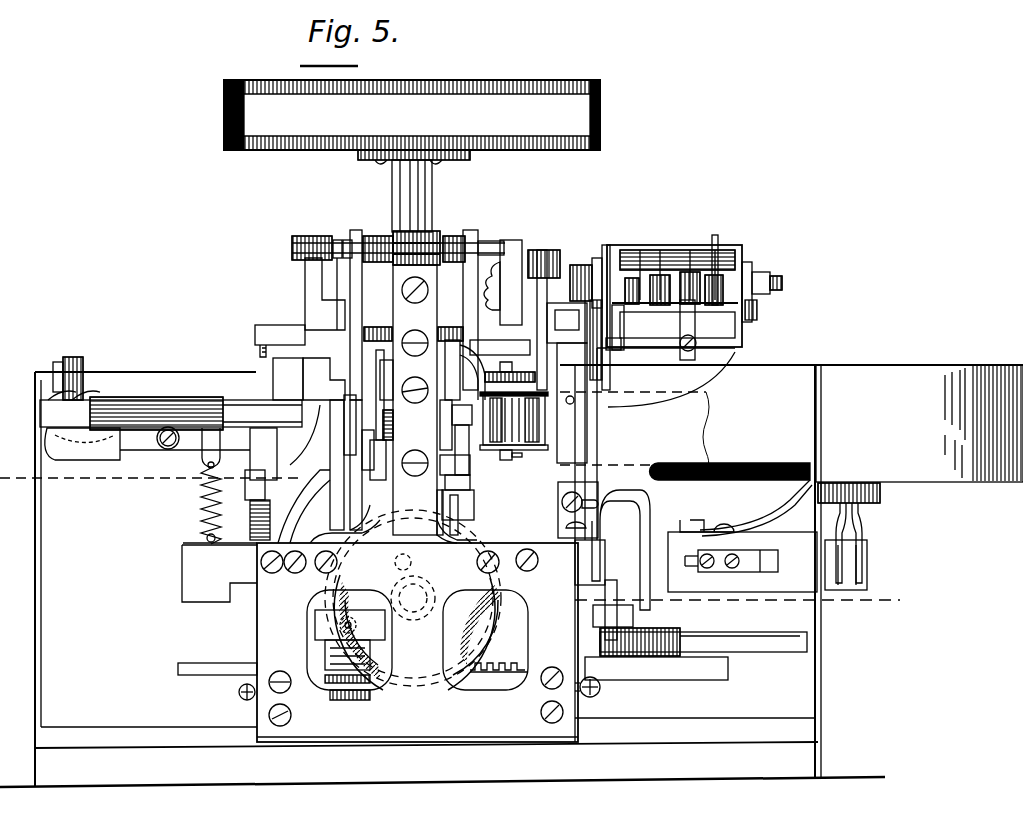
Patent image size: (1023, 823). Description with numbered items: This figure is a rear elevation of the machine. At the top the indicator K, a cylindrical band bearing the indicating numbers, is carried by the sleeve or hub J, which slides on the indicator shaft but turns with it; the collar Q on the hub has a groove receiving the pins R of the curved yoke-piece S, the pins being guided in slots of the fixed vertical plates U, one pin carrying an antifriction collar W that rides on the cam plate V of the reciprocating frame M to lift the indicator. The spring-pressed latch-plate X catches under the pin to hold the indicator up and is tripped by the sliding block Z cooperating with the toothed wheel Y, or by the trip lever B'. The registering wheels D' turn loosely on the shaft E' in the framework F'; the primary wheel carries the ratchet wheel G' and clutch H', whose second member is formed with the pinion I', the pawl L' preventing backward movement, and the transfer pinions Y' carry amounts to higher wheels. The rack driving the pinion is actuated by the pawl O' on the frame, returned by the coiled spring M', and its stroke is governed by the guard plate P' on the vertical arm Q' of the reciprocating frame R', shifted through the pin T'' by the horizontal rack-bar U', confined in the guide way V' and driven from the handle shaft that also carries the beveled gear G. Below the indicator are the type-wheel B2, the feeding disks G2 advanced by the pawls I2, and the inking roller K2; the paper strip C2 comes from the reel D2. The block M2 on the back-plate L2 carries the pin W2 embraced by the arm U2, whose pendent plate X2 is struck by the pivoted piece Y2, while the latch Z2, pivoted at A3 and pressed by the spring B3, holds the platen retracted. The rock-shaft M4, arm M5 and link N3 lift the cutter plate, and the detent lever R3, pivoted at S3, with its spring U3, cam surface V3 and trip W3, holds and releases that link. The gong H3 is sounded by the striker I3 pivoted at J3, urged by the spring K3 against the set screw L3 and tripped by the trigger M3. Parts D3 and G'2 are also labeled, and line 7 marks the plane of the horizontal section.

The indicator K is at (600, 120).
The sleeve or hub J is at (435, 190).
The antifriction collar W is at (300, 237).
The latch-plate X is at (336, 240).
The pins R is at (422, 233).
The yoke-piece S is at (376, 236).
The collar Q is at (422, 236).
The cam plate V is at (300, 307).
The fixed vertical plates U is at (414, 315).
The sliding block Z is at (385, 327).
The toothed wheel Y is at (413, 400).
The pawl O' is at (509, 282).
The coiled spring M' is at (553, 323).
The adjustable guard plate P' is at (540, 320).
The spring-pressed pawls I2 is at (487, 370).
The feeding disks G2 is at (525, 372).
The pinion I' is at (581, 267).
The clutch H' is at (596, 299).
The ratchet wheel G' is at (616, 308).
The registering wheels D' is at (674, 282).
The transfer pinions Y' is at (674, 281).
The shaft E' is at (774, 292).
The framework F' is at (732, 330).
The pawl L' is at (624, 332).
The link N3 is at (83, 365).
The arm M5 is at (85, 395).
The rock-shaft M4 is at (171, 403).
The reciprocating frame or carriage M is at (288, 379).
The trip lever B' is at (324, 381).
The spring B3 is at (382, 380).
The pin W2 is at (440, 415).
The pivot A3 is at (412, 427).
The block M2 is at (442, 450).
The latch Z2 is at (378, 455).
The pendent plate X2 is at (445, 483).
The arm U2 is at (500, 462).
The pivoted piece Y2 is at (470, 500).
The type-wheel B2 is at (515, 412).
The inking roller K2 is at (548, 420).
The paper strip C2 is at (881, 423).
The reel D2 is at (730, 483).
The vertical arm Q' is at (627, 550).
The section line 7 is at (746, 599).
The reciprocating frame R' is at (703, 635).
The lever T'' is at (656, 668).
The guide way V' is at (643, 642).
The beveled gear G is at (440, 632).
The gong H3 is at (485, 640).
The rack-bar U' is at (499, 653).
The striker I3 is at (362, 600).
The pivot J3 is at (345, 625).
The trigger M3 is at (330, 660).
The set screw L3 is at (335, 690).
The coiled spring K3 is at (350, 712).
The back-plate L2 is at (380, 634).
The arm D3 is at (320, 490).
The pendent cam surface V3 is at (261, 484).
The trip W3 is at (240, 462).
The coiled spring U3 is at (195, 510).
The pivot S3 is at (165, 452).
The detent lever R3 is at (100, 460).
The arm G'2 is at (323, 456).